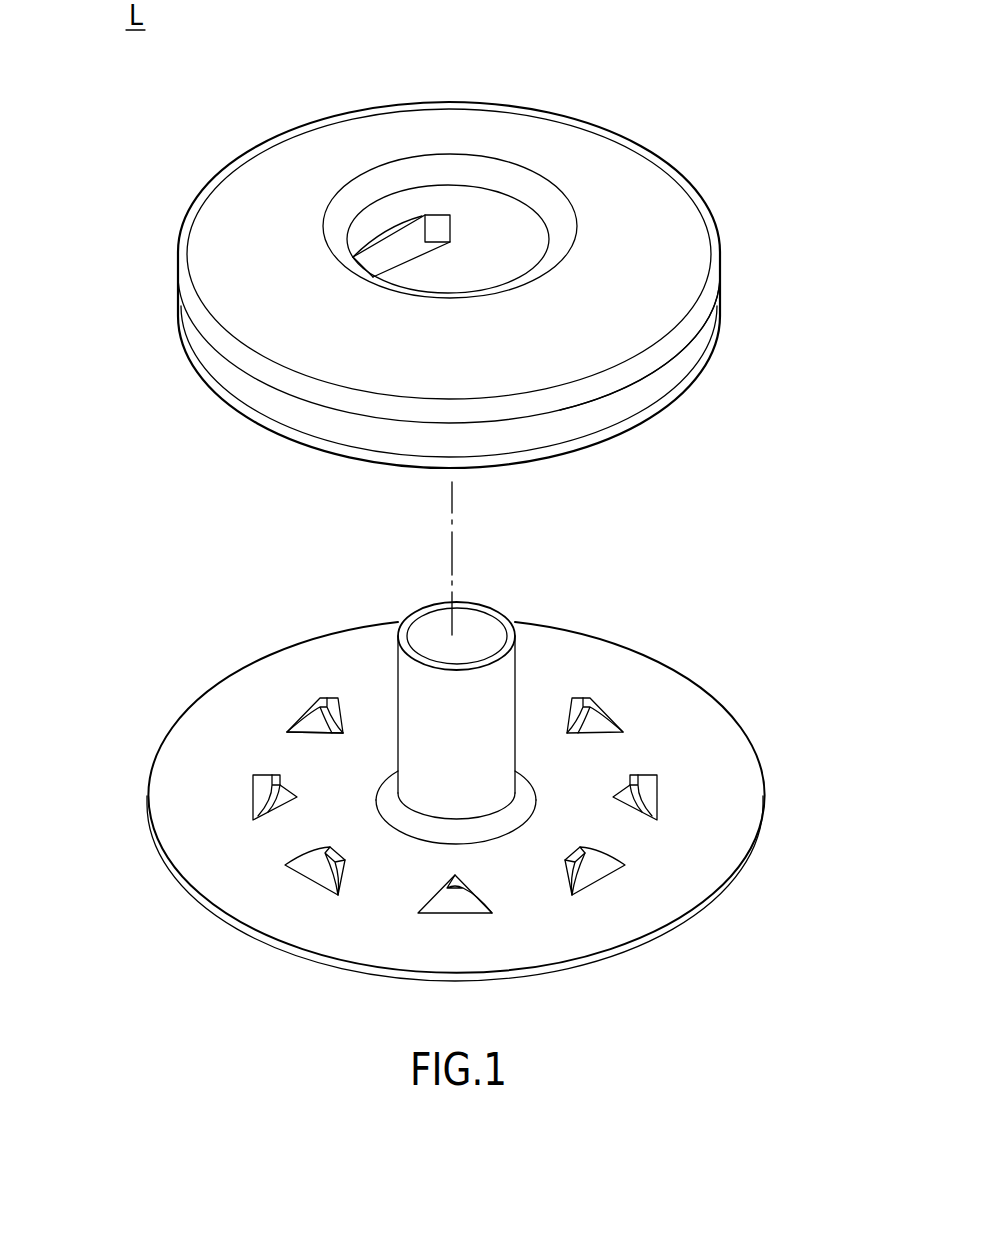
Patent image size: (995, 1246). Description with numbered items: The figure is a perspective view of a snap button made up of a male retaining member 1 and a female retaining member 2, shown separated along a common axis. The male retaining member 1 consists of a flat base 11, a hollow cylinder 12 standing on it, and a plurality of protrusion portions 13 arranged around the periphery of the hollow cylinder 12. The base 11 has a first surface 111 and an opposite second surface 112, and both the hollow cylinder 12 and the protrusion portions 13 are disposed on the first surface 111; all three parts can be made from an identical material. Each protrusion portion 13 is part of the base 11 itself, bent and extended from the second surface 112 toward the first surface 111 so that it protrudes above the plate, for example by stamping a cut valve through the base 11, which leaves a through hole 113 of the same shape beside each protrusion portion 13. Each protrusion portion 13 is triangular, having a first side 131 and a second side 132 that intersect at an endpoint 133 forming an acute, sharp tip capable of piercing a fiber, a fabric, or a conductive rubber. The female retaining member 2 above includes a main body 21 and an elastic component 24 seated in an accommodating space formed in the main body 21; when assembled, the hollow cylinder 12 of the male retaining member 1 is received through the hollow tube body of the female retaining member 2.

The male retaining member 1 is at (451, 773).
The base 11 is at (401, 801).
The first surface 111 is at (202, 826).
The second surface 112 is at (187, 896).
The through hole 113 is at (343, 733).
The hollow cylinder 12 is at (502, 682).
The protrusion portion 13 is at (559, 832).
The first side 131 is at (578, 852).
The second side 132 is at (588, 855).
The endpoint 133 is at (582, 848).
The female retaining member 2 is at (469, 268).
The main body 21 is at (662, 377).
The elastic component 24 is at (385, 255).